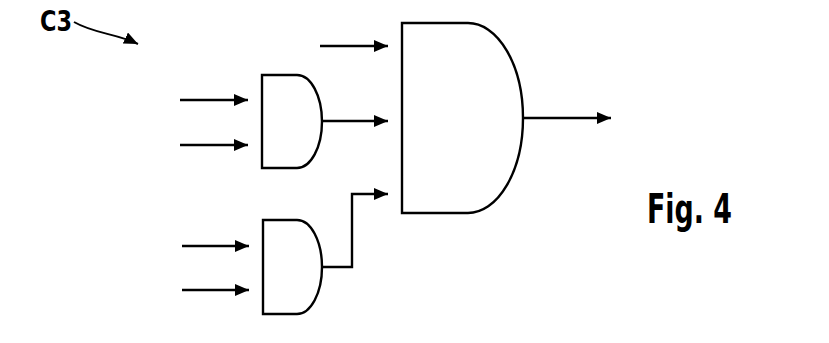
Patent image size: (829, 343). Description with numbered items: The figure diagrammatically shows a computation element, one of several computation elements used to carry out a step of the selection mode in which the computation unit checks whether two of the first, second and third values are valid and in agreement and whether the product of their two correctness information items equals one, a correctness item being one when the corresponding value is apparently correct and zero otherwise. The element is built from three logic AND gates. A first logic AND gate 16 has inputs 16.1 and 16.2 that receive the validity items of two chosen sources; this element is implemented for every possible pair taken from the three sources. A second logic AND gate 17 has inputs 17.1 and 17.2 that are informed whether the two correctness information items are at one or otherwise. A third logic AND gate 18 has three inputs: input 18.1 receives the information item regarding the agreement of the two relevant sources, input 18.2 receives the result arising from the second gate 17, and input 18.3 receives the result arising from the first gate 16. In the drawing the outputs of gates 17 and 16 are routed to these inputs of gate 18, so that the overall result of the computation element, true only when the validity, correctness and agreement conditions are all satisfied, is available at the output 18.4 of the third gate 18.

The first logic AND gate 16 is at (318, 296).
The input of first logic AND gate 16.1 is at (223, 243).
The input of first logic AND gate 16.2 is at (210, 288).
The second logic AND gate 17 is at (318, 150).
The input of second logic AND gate 17.1 is at (205, 97).
The input of second logic AND gate 17.2 is at (212, 143).
The third logic AND gate 18 is at (492, 205).
The input of third logic AND gate 18.1 is at (352, 44).
The input of third logic AND gate 18.2 is at (352, 118).
The input of third logic AND gate 18.3 is at (355, 238).
The output of third logic AND gate 18.4 is at (552, 116).